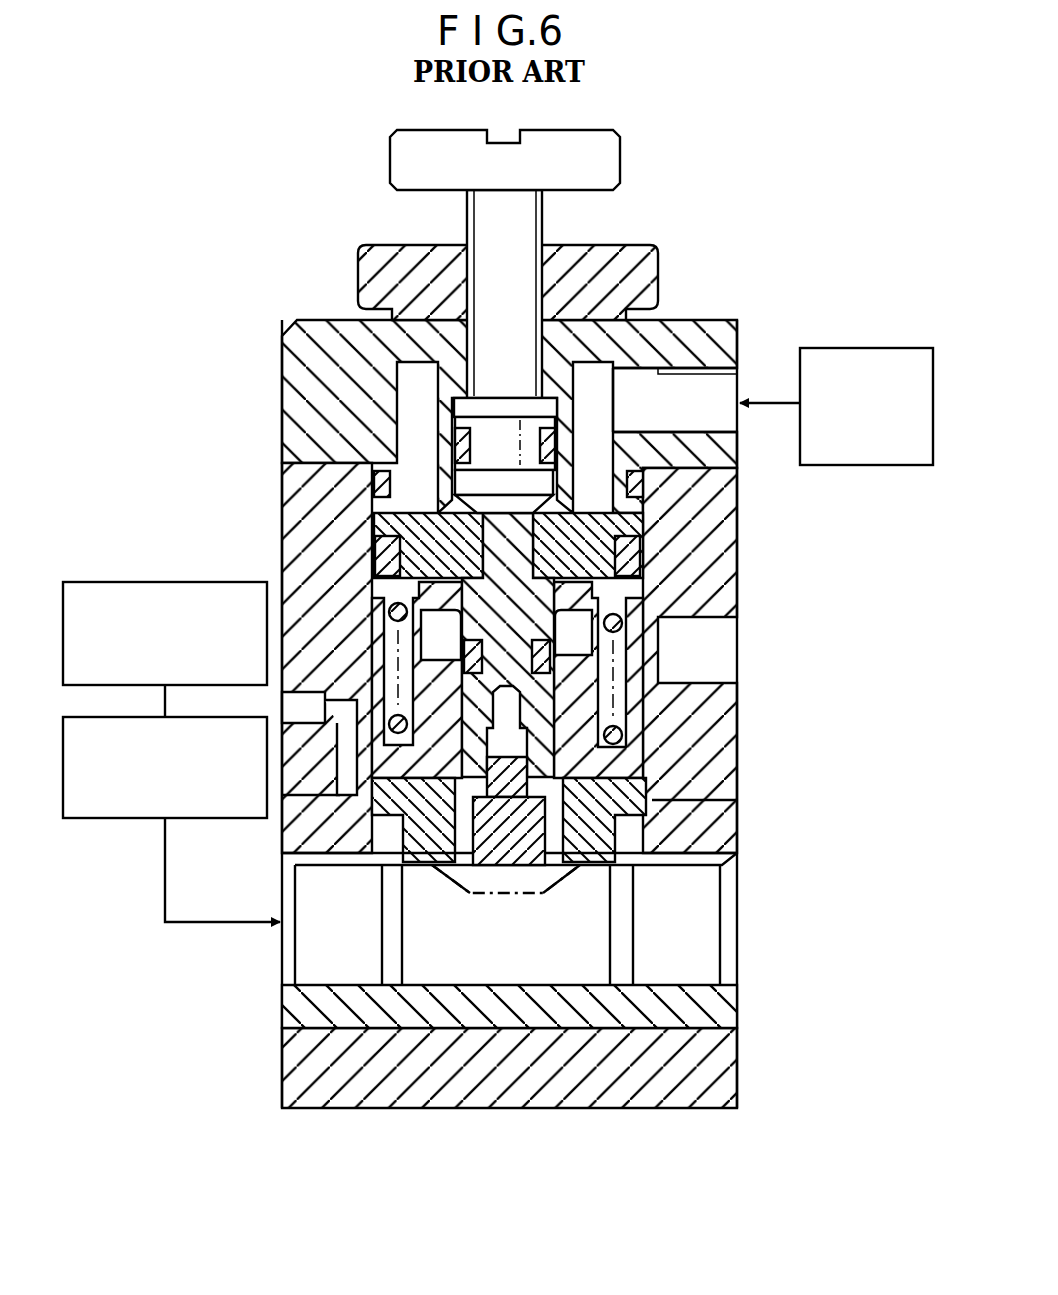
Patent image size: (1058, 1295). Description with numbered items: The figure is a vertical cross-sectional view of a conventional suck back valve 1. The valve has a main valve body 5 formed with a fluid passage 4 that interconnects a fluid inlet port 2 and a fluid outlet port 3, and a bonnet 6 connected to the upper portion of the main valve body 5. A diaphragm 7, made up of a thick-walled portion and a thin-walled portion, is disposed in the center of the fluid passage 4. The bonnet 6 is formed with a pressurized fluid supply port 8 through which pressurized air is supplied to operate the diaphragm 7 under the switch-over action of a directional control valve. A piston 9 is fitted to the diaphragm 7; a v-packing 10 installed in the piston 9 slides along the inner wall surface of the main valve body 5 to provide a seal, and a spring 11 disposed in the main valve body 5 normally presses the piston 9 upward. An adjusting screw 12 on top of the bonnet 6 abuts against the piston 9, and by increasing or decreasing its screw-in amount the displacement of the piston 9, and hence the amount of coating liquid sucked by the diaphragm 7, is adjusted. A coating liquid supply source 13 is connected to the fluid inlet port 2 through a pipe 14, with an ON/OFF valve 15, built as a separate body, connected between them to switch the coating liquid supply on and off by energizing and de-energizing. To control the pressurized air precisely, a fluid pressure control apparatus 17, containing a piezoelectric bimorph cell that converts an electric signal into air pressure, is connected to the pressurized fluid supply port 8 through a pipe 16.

The suck back valve 1 is at (749, 217).
The fluid inlet port 2 is at (343, 945).
The fluid outlet port 3 is at (690, 943).
The fluid passage 4 is at (430, 986).
The main valve body 5 is at (742, 773).
The bonnet 6 is at (741, 331).
The diaphragm 7 is at (530, 867).
The pressurized fluid supply port 8 is at (740, 414).
The piston 9 is at (523, 609).
The v-packing 10 is at (378, 565).
The spring 11 is at (628, 734).
The adjusting screw 12 is at (520, 222).
The coating liquid supply source 13 is at (85, 582).
The pipe 14 is at (165, 697).
The ON/OFF valve 15 is at (85, 818).
The pipe 16 is at (781, 400).
The fluid pressure control apparatus 17 is at (891, 348).